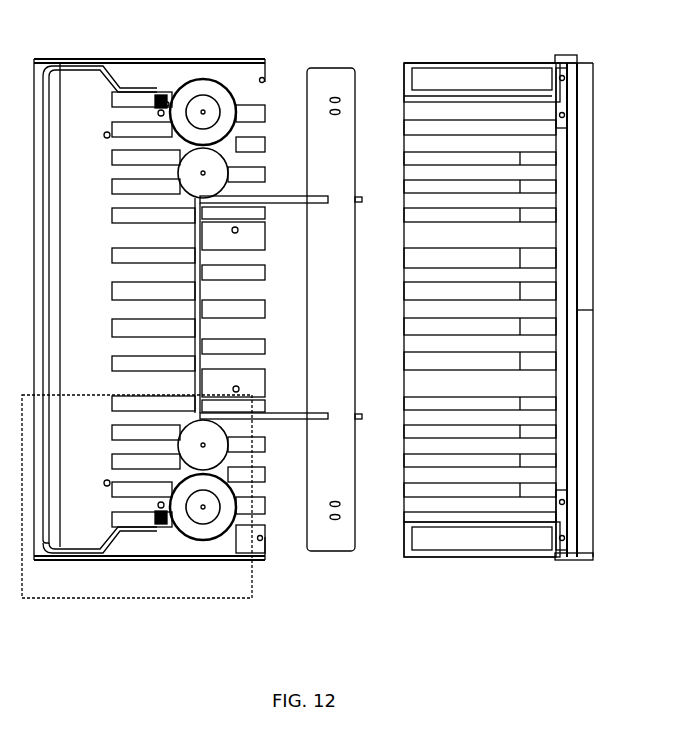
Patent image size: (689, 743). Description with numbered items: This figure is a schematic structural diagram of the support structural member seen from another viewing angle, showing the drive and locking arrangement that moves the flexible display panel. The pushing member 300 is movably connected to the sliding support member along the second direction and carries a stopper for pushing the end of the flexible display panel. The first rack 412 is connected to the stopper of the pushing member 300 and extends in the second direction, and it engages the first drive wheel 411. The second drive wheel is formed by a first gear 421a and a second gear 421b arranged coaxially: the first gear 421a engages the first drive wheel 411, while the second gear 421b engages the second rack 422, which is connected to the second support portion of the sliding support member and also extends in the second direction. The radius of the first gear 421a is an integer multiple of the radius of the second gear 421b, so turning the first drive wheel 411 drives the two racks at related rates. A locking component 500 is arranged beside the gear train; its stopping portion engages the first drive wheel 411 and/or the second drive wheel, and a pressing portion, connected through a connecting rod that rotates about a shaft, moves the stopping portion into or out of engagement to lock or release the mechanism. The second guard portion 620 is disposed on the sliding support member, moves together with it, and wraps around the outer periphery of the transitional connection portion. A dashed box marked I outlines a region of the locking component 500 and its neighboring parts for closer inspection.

The locking component 500 is at (155, 88).
The first gear 421a is at (232, 103).
The second gear 421b is at (205, 108).
The first drive wheel 411 is at (220, 172).
The first rack 412 is at (287, 203).
The pushing member 300 is at (338, 76).
The second rack 422 is at (447, 92).
The second guard portion 620 is at (584, 80).
The detail region I is at (100, 598).